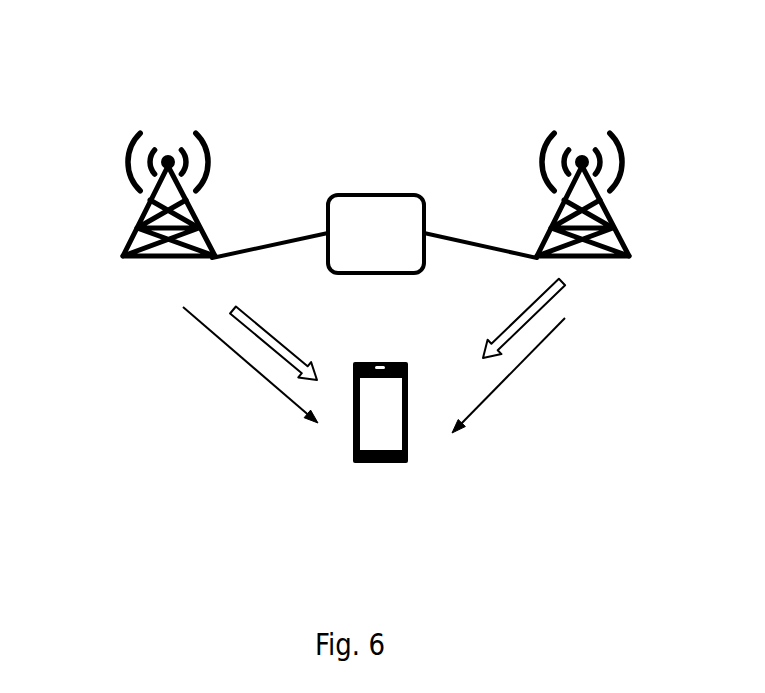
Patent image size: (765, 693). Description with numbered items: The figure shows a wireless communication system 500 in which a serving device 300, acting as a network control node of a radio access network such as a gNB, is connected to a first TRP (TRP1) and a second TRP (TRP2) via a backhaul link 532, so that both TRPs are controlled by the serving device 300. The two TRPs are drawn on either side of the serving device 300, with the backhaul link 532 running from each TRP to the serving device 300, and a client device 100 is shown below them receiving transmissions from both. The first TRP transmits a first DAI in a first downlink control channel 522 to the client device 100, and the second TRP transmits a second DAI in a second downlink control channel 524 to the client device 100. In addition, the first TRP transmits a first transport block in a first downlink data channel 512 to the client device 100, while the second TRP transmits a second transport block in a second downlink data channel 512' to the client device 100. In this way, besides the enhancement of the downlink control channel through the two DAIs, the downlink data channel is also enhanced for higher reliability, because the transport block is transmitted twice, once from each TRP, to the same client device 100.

The wireless communication system 500 is at (603, 45).
The first TRP TRP1 is at (128, 194).
The second TRP TRP2 is at (621, 194).
The serving device 300 is at (376, 234).
The backhaul link 532 is at (293, 229).
The second downlink data channel 512' is at (514, 318).
The first downlink data channel 512 is at (273, 334).
The first downlink control channel 522 is at (249, 368).
The second downlink control channel 524 is at (512, 375).
The client device 100 is at (380, 472).